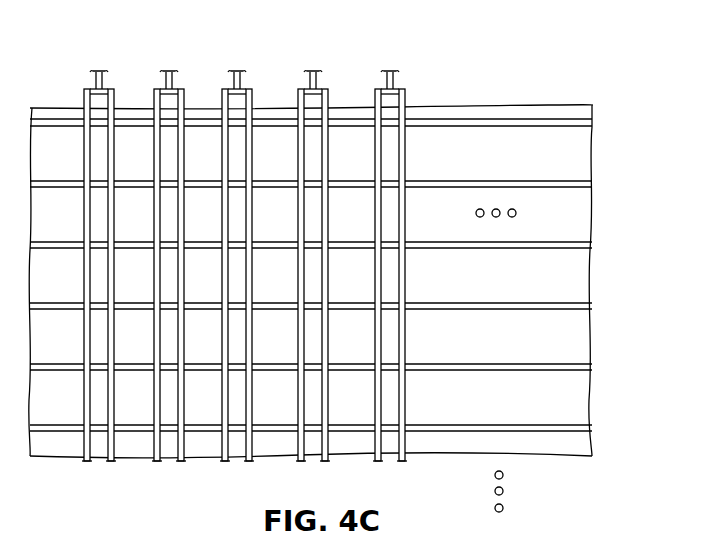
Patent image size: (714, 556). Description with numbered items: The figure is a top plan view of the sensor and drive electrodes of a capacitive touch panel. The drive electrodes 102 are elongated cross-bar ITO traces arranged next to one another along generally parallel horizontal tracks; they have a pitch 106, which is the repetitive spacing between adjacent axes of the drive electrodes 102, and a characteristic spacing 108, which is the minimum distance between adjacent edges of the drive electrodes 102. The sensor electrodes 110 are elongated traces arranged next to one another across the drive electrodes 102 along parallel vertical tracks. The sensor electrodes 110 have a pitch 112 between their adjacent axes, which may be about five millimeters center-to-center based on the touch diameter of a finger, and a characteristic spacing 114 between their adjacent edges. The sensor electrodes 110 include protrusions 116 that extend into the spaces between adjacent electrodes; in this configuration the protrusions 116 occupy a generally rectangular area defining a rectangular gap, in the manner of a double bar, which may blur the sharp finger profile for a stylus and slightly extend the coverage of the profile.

The drive electrodes 102 is at (578, 140).
The pitch 106 is at (598, 274).
The characteristic spacing 108 is at (610, 213).
The sensor electrodes 110 is at (405, 88).
The pitch 112 is at (170, 66).
The characteristic spacing 114 is at (192, 480).
The protrusions 116 is at (112, 390).